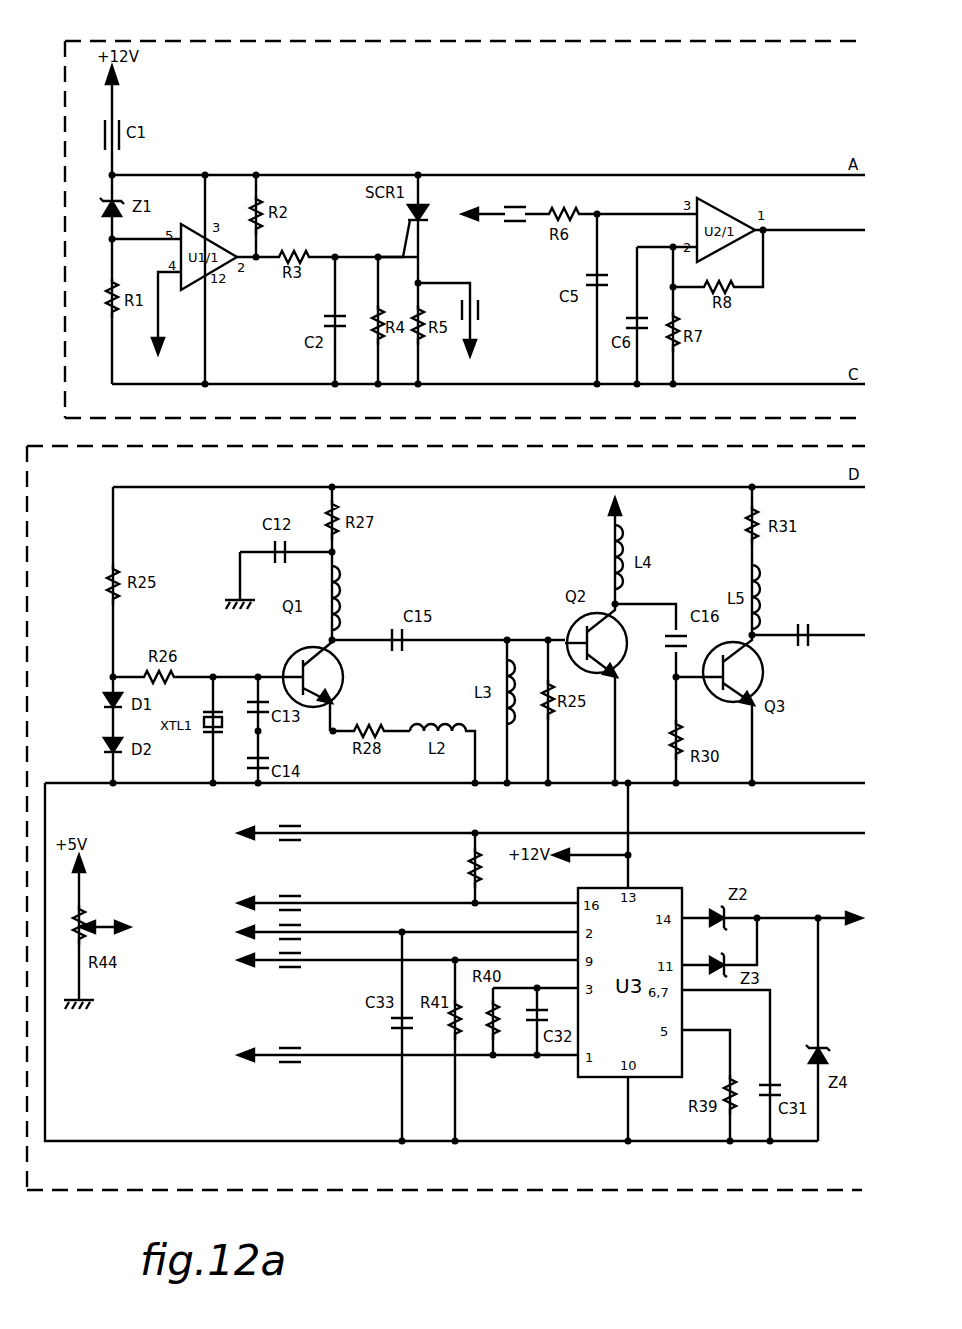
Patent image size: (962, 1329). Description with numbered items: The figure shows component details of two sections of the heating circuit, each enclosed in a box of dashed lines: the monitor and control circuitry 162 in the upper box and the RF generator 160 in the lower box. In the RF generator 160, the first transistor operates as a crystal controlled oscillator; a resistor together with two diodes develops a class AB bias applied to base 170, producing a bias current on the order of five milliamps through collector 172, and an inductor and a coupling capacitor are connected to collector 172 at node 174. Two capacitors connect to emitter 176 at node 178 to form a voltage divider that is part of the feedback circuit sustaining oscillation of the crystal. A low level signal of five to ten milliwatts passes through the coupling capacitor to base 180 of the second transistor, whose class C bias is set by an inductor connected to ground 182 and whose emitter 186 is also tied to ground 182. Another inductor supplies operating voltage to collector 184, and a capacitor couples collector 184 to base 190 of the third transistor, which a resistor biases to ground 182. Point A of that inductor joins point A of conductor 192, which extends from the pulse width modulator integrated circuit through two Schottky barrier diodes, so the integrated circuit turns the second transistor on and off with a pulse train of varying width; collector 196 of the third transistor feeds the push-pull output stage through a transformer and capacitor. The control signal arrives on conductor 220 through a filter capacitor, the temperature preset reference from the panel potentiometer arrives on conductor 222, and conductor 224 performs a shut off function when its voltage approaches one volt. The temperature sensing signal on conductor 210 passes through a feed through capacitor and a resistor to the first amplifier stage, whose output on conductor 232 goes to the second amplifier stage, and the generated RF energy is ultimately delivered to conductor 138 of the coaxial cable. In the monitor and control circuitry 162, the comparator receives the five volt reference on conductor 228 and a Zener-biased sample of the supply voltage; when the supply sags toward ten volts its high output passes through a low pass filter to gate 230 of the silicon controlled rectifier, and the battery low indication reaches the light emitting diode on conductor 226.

The monitor and control circuitry 162 is at (347, 41).
The RF generator 160 is at (648, 1190).
The conductor 210 is at (498, 214).
The conductor 232 is at (776, 230).
The gate 230 is at (400, 246).
The conductor 226 is at (448, 283).
The conductor 228 is at (162, 324).
The conductor 192 is at (620, 530).
The collector 172 is at (330, 640).
The node 174 is at (335, 644).
The emitter 176 is at (338, 714).
The node 178 is at (333, 734).
The base 170 is at (274, 670).
The base 180 is at (563, 640).
The collector 184 is at (622, 606).
The emitter 186 is at (620, 690).
The base 190 is at (690, 679).
The collector 196 is at (765, 638).
The ground 182 is at (511, 786).
The conductor 138 is at (802, 834).
The conductor 222 is at (468, 932).
The conductor 224 is at (383, 962).
The conductor 220 is at (385, 1057).